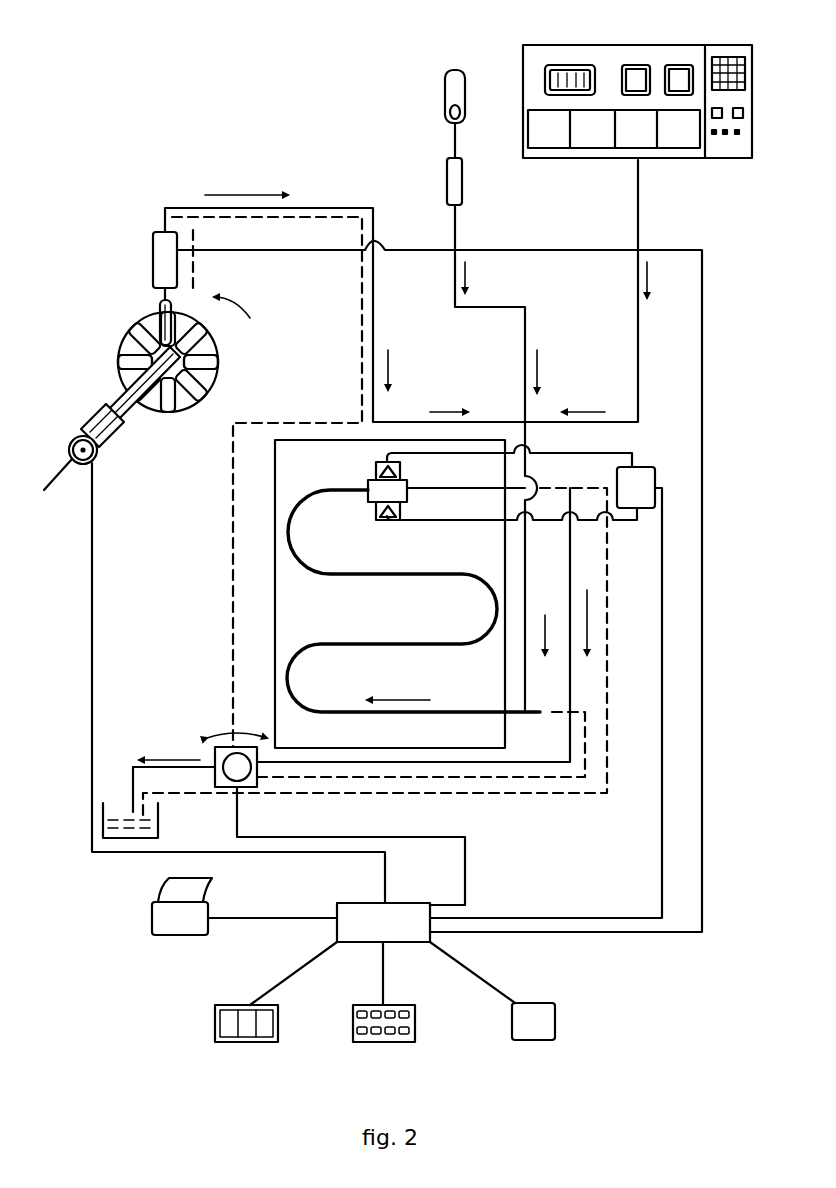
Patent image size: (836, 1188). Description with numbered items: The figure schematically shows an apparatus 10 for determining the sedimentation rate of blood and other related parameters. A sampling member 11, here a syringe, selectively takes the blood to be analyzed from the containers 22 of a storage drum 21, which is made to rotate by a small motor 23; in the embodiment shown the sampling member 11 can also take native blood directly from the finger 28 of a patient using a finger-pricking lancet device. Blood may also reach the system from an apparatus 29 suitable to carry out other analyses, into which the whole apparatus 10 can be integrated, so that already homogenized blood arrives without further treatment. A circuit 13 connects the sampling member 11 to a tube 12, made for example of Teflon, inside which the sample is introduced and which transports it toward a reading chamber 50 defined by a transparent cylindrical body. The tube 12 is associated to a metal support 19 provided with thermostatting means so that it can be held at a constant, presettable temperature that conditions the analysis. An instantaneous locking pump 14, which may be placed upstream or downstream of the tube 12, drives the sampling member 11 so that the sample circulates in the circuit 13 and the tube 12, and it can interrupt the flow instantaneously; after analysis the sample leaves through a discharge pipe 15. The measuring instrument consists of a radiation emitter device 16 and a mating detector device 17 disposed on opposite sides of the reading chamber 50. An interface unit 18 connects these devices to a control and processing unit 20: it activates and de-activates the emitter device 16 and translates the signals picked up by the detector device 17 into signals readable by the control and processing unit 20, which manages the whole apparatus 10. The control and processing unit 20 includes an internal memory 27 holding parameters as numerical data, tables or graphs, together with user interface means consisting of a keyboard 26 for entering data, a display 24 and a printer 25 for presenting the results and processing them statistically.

The apparatus 10 is at (186, 146).
The sampling member 11 is at (447, 178).
The tube 12 is at (385, 578).
The circuit 13 is at (355, 328).
The instantaneous locking pump 14 is at (213, 752).
The discharge pipe 15 is at (123, 800).
The radiation emitter device 16 is at (376, 509).
The detector device 17 is at (376, 472).
The interface unit 18 is at (641, 469).
The metal support 19 is at (275, 530).
The control and processing unit 20 is at (328, 904).
The storage drum 21 is at (183, 406).
The containers 22 is at (112, 358).
The small motor 23 is at (110, 443).
The display 24 is at (215, 1025).
The printer 25 is at (160, 918).
The keyboard 26 is at (353, 1025).
The internal memory 27 is at (555, 1022).
The finger 28 is at (447, 78).
The apparatus for other analyses 29 is at (530, 48).
The reading chamber 50 is at (416, 478).